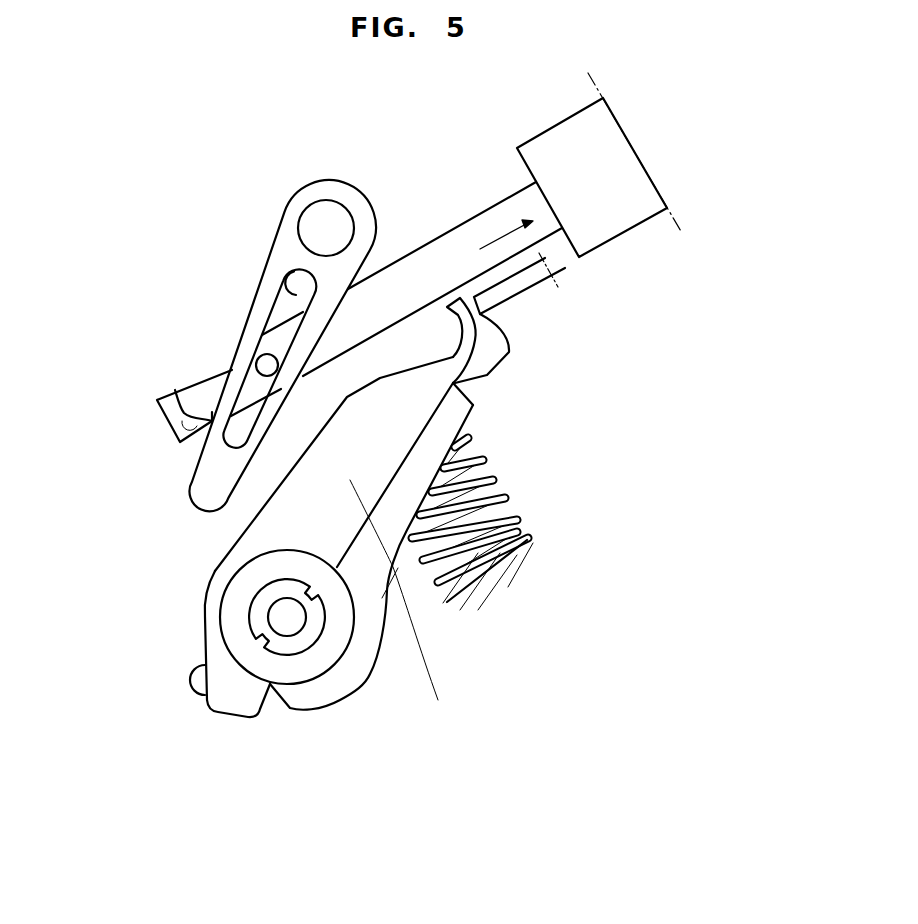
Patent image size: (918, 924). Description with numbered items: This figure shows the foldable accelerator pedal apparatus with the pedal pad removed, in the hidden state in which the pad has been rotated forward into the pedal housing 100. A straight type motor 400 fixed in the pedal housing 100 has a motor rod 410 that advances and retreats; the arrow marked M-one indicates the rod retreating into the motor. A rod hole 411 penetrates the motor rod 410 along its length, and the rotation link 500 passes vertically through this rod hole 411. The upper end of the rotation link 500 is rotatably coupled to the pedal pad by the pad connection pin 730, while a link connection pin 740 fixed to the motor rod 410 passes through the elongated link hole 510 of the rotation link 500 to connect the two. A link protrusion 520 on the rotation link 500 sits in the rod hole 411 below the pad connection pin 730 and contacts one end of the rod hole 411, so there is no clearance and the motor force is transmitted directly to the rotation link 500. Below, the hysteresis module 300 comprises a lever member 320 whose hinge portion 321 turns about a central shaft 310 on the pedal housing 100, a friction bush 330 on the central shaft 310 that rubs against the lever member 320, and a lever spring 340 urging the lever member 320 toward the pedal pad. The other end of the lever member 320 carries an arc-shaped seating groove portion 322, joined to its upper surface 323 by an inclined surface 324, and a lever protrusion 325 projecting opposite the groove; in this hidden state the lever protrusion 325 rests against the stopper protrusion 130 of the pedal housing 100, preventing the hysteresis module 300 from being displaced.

The pedal housing 100 is at (540, 562).
The stopper protrusion 130 is at (537, 278).
The hysteresis module 300 is at (341, 473).
The central shaft 310 is at (280, 617).
The lever member 320 is at (275, 460).
The hinge portion 321 is at (297, 695).
The seating groove portion 322 is at (453, 352).
The upper surface 323 is at (297, 457).
The inclined surface 324 is at (383, 380).
The lever protrusion 325 is at (487, 347).
The friction bush 330 is at (318, 657).
The lever spring 340 is at (493, 478).
The straight type motor 400 is at (625, 162).
The motor rod 410 is at (314, 295).
The rod hole 411 is at (149, 382).
The rotation link 500 is at (277, 314).
The link hole 510 is at (300, 270).
The link protrusion 520 is at (200, 395).
The pad connection pin 730 is at (320, 220).
The link connection pin 740 is at (266, 356).